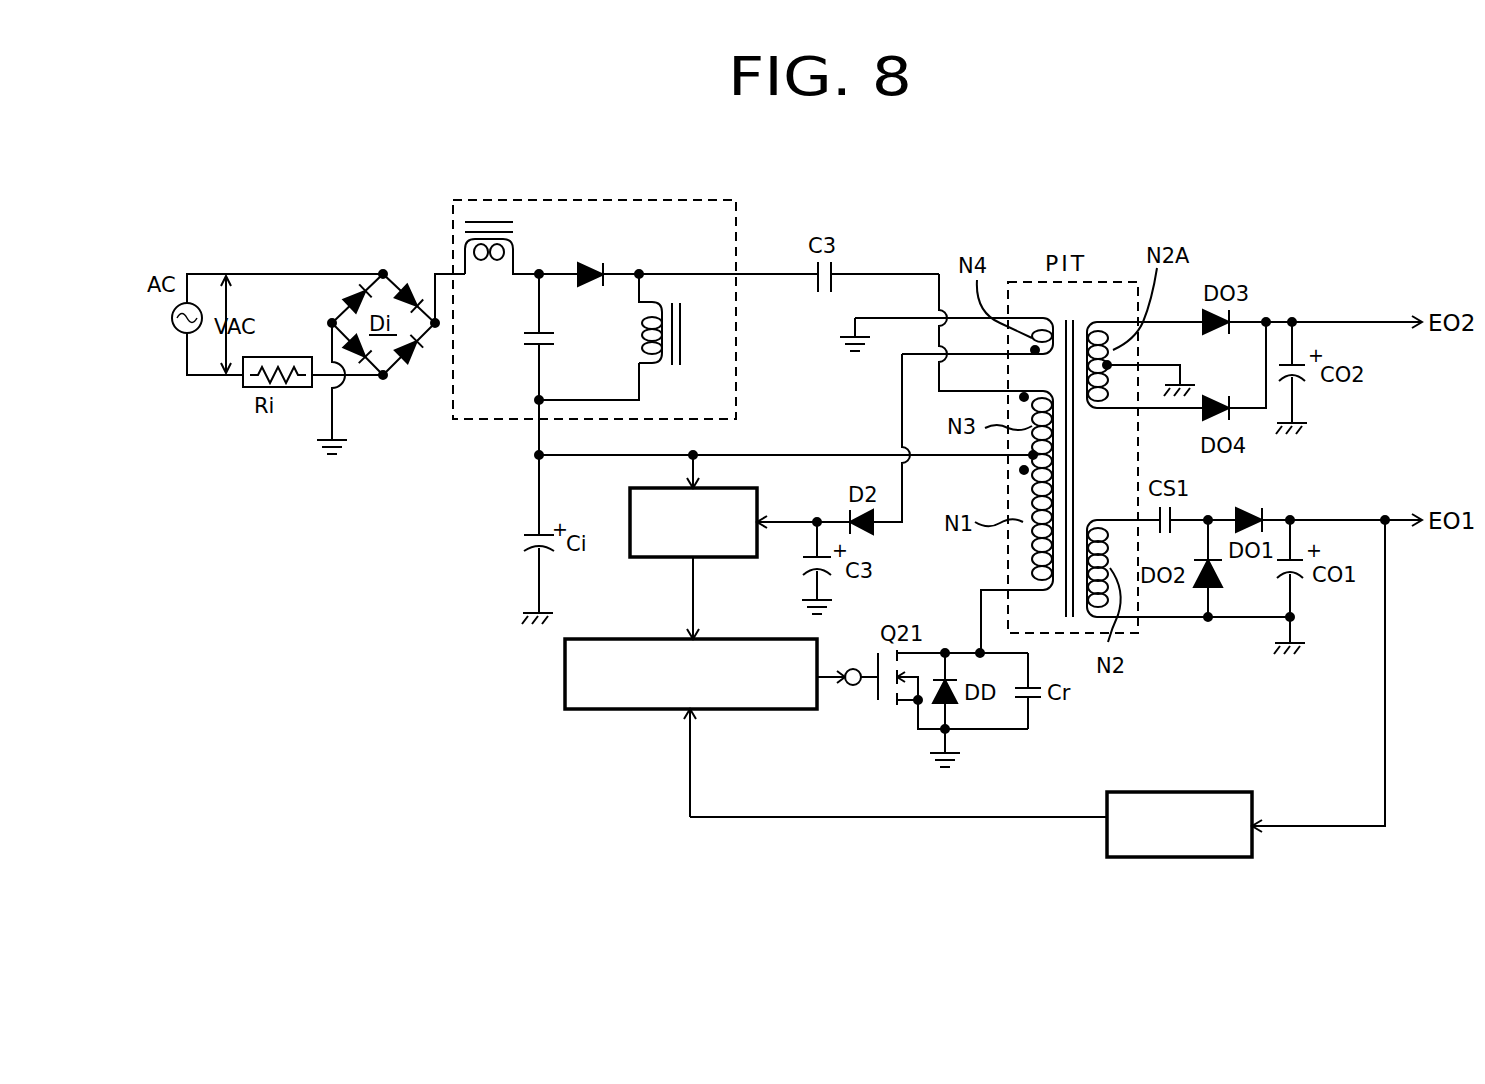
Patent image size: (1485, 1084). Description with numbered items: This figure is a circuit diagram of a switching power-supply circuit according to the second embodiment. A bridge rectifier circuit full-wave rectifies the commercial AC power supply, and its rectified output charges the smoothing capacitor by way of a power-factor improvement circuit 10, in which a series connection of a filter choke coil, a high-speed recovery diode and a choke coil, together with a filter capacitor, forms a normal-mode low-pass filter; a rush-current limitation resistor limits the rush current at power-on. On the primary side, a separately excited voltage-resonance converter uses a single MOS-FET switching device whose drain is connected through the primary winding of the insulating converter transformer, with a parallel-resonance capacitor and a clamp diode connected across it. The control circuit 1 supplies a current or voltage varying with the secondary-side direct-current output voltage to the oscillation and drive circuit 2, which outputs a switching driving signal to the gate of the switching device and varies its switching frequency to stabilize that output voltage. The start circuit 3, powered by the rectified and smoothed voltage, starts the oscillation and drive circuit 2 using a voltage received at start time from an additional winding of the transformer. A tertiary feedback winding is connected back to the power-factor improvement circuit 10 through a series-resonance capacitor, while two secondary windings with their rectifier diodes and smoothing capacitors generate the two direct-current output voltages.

The power-factor improvement circuit 10 is at (633, 200).
The control circuit 1 is at (1175, 792).
The oscillation and drive circuit 2 is at (743, 709).
The start circuit 3 is at (713, 557).